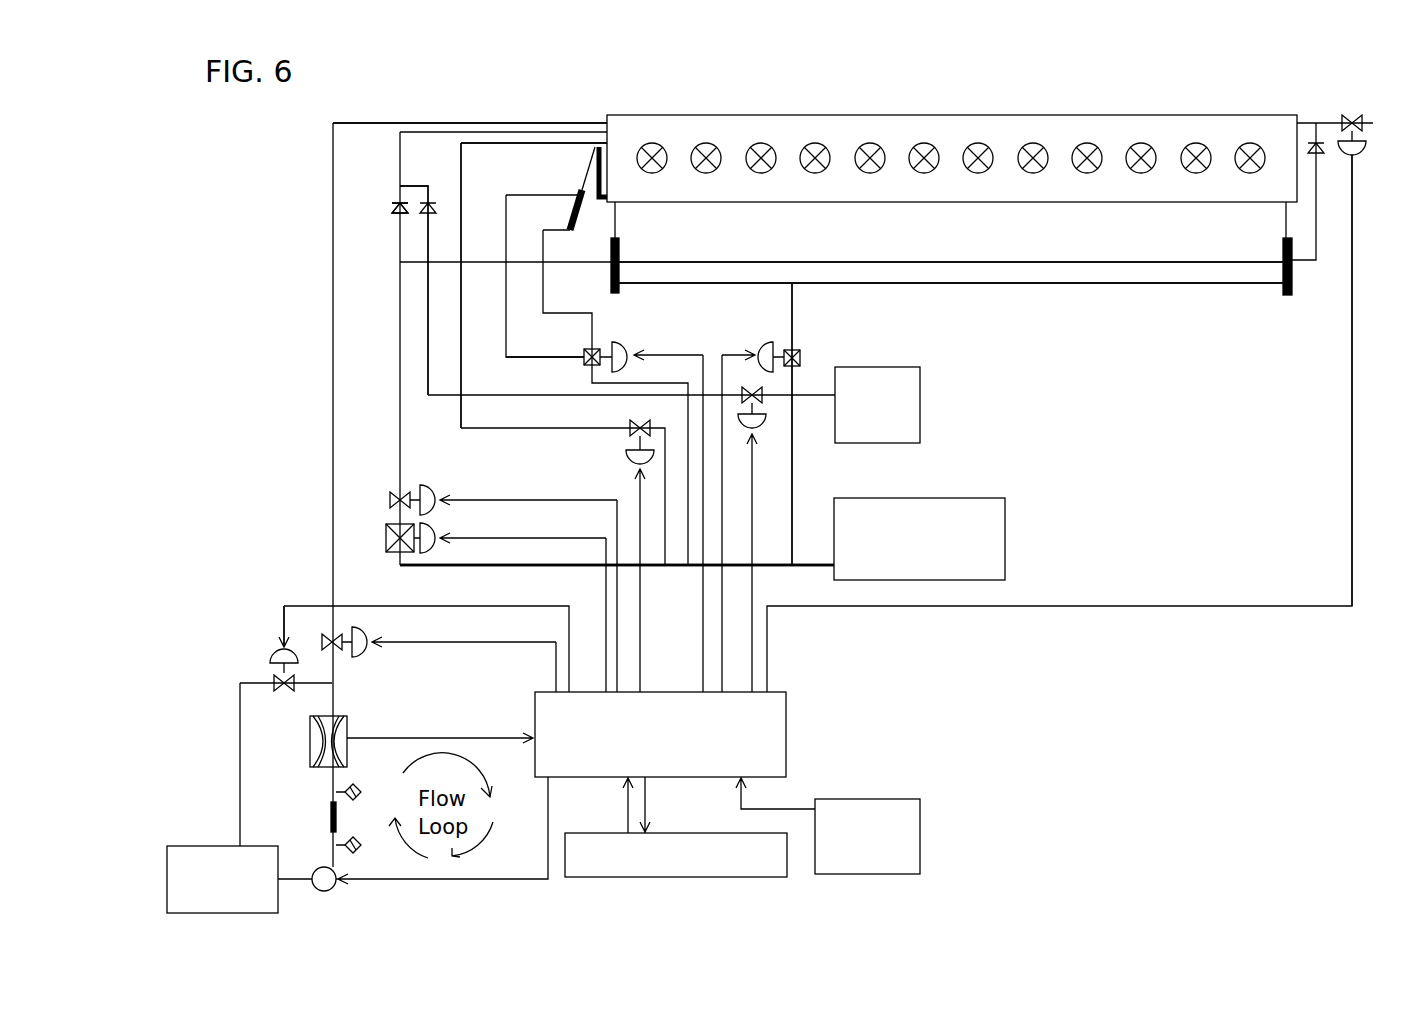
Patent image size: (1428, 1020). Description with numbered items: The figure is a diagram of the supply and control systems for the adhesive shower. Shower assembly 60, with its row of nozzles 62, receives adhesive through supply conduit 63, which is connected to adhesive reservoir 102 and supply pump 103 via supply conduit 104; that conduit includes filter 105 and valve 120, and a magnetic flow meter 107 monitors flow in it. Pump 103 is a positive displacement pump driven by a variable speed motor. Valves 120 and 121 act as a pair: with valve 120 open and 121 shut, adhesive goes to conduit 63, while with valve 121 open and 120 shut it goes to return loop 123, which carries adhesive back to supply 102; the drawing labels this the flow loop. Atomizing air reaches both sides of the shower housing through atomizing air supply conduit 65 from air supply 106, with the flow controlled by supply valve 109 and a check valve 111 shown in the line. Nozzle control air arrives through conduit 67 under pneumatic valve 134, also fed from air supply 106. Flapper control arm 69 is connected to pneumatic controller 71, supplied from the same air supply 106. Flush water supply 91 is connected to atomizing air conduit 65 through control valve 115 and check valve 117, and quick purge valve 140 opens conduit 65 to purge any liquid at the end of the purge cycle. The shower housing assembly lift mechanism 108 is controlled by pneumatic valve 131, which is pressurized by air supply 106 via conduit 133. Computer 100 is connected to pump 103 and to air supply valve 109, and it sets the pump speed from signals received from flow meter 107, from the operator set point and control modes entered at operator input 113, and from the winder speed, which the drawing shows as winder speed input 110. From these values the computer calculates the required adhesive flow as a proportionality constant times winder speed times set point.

The shower assembly 60 is at (1158, 114).
The nozzles 62 is at (1266, 180).
The supply conduit 63 is at (348, 123).
The atomizing air supply conduit 65 is at (1316, 123).
The conduit 67 is at (497, 145).
The flapper control arm 69 is at (600, 200).
The pneumatic controller 71 is at (617, 343).
The flush water supply 91 is at (922, 390).
The computer 100 is at (788, 727).
The adhesive reservoir 102 is at (280, 893).
The supply pump 103 is at (330, 890).
The supply conduit 104 is at (333, 703).
The filter 105 is at (276, 790).
The air supply 106 is at (1036, 522).
The magnetic flow meter 107 is at (347, 727).
The shower housing assembly lift mechanism 108 is at (623, 248).
The supply valve 109 is at (410, 480).
The winder speed input 110 is at (922, 838).
The check valve 111 is at (396, 207).
The operator input 113 is at (707, 878).
The control valve 115 is at (778, 406).
The check valve 117 is at (429, 200).
The valve 120 is at (372, 638).
The valve 121 is at (268, 661).
The return loop 123 is at (240, 761).
The pneumatic valve 131 is at (803, 346).
The conduit 133 is at (882, 285).
The pneumatic valve 134 is at (626, 451).
The quick purge valve 140 is at (1371, 115).